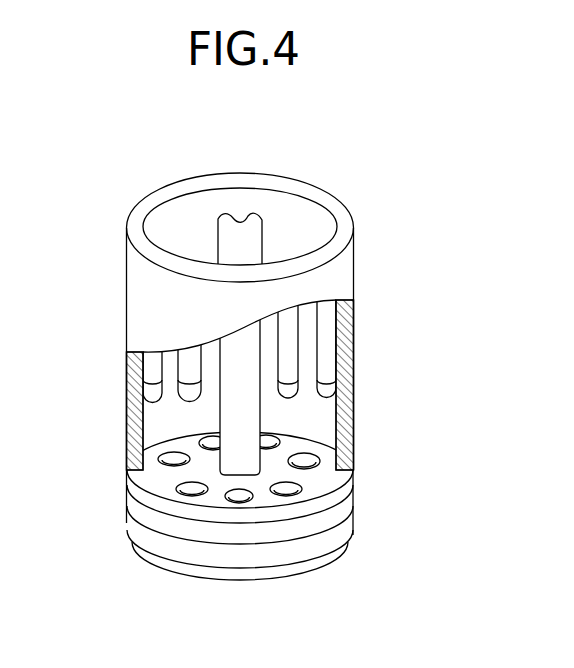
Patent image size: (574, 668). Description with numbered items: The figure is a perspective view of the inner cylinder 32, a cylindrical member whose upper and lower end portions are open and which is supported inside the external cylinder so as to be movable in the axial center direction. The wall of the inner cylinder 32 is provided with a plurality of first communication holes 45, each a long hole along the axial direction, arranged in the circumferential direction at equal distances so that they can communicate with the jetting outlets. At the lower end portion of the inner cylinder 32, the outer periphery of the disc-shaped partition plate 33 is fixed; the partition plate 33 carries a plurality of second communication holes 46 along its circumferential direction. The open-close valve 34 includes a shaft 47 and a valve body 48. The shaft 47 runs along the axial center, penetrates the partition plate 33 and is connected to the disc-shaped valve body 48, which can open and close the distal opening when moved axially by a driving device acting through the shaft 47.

The inner cylinder 32 is at (124, 290).
The partition plate 33 is at (330, 518).
The open-close valve 34 is at (318, 571).
The first communication holes 45 is at (178, 372).
The second communication holes 46 is at (276, 447).
The shaft 47 is at (232, 228).
The valve body 48 is at (297, 553).